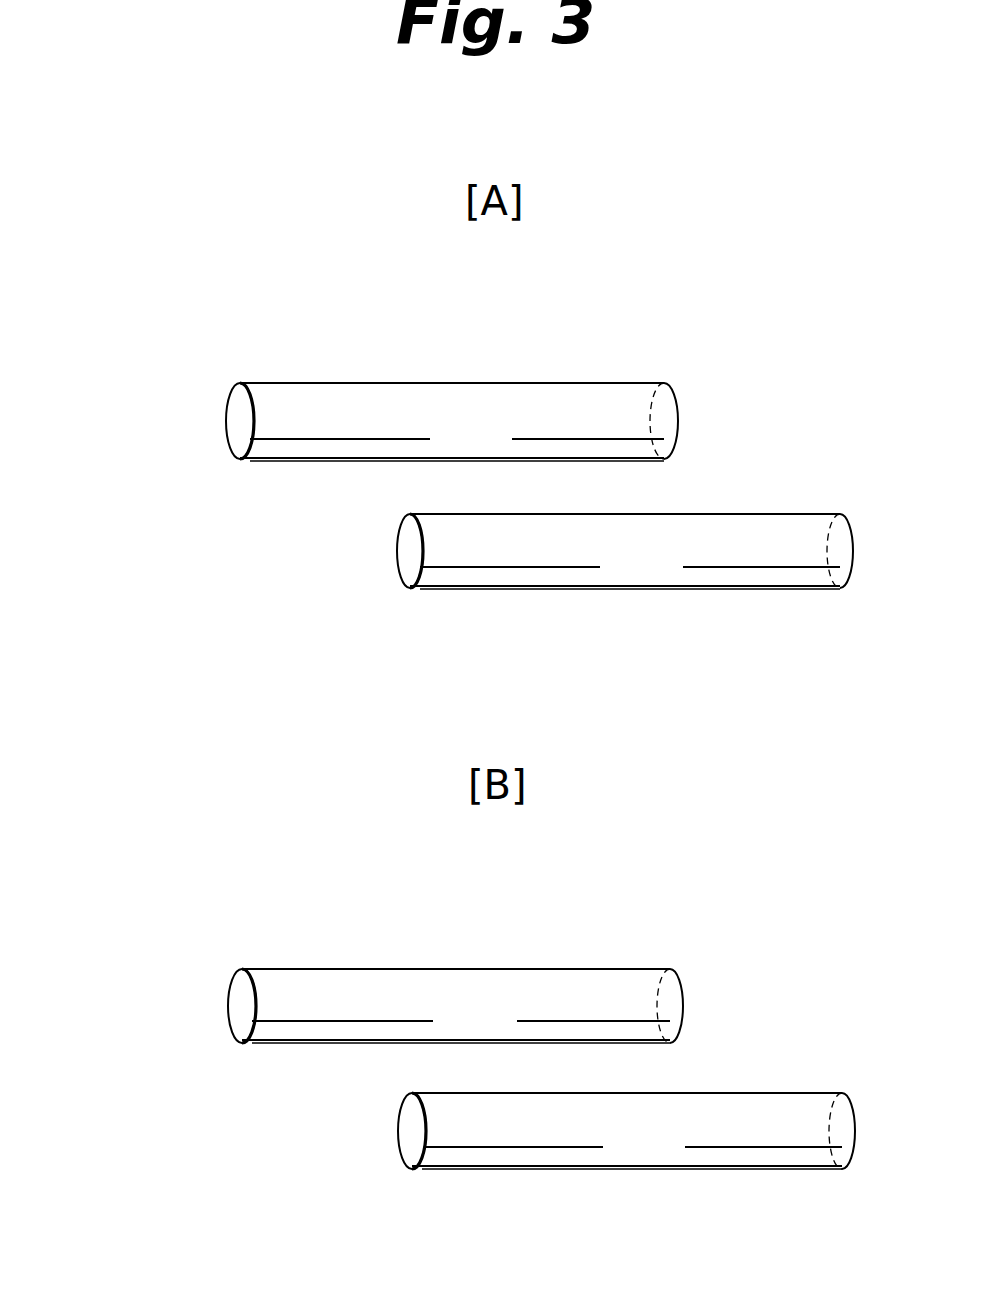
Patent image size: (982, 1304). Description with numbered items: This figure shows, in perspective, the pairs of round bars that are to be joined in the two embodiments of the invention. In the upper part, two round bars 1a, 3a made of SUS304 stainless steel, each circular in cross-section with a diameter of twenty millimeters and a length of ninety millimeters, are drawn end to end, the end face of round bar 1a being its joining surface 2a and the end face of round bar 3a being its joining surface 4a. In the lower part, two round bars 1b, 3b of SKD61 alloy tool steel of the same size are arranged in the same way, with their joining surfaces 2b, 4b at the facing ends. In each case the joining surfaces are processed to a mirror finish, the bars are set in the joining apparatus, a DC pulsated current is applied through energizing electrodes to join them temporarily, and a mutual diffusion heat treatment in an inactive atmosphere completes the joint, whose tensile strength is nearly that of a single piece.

The round bar 1a is at (404, 405).
The joining surface 2a is at (233, 421).
The round bar 3a is at (770, 530).
The joining surface 4a is at (407, 555).
The round bar 1b is at (543, 990).
The joining surface 2b is at (236, 1005).
The round bar 3b is at (773, 1113).
The joining surface 4b is at (410, 1136).